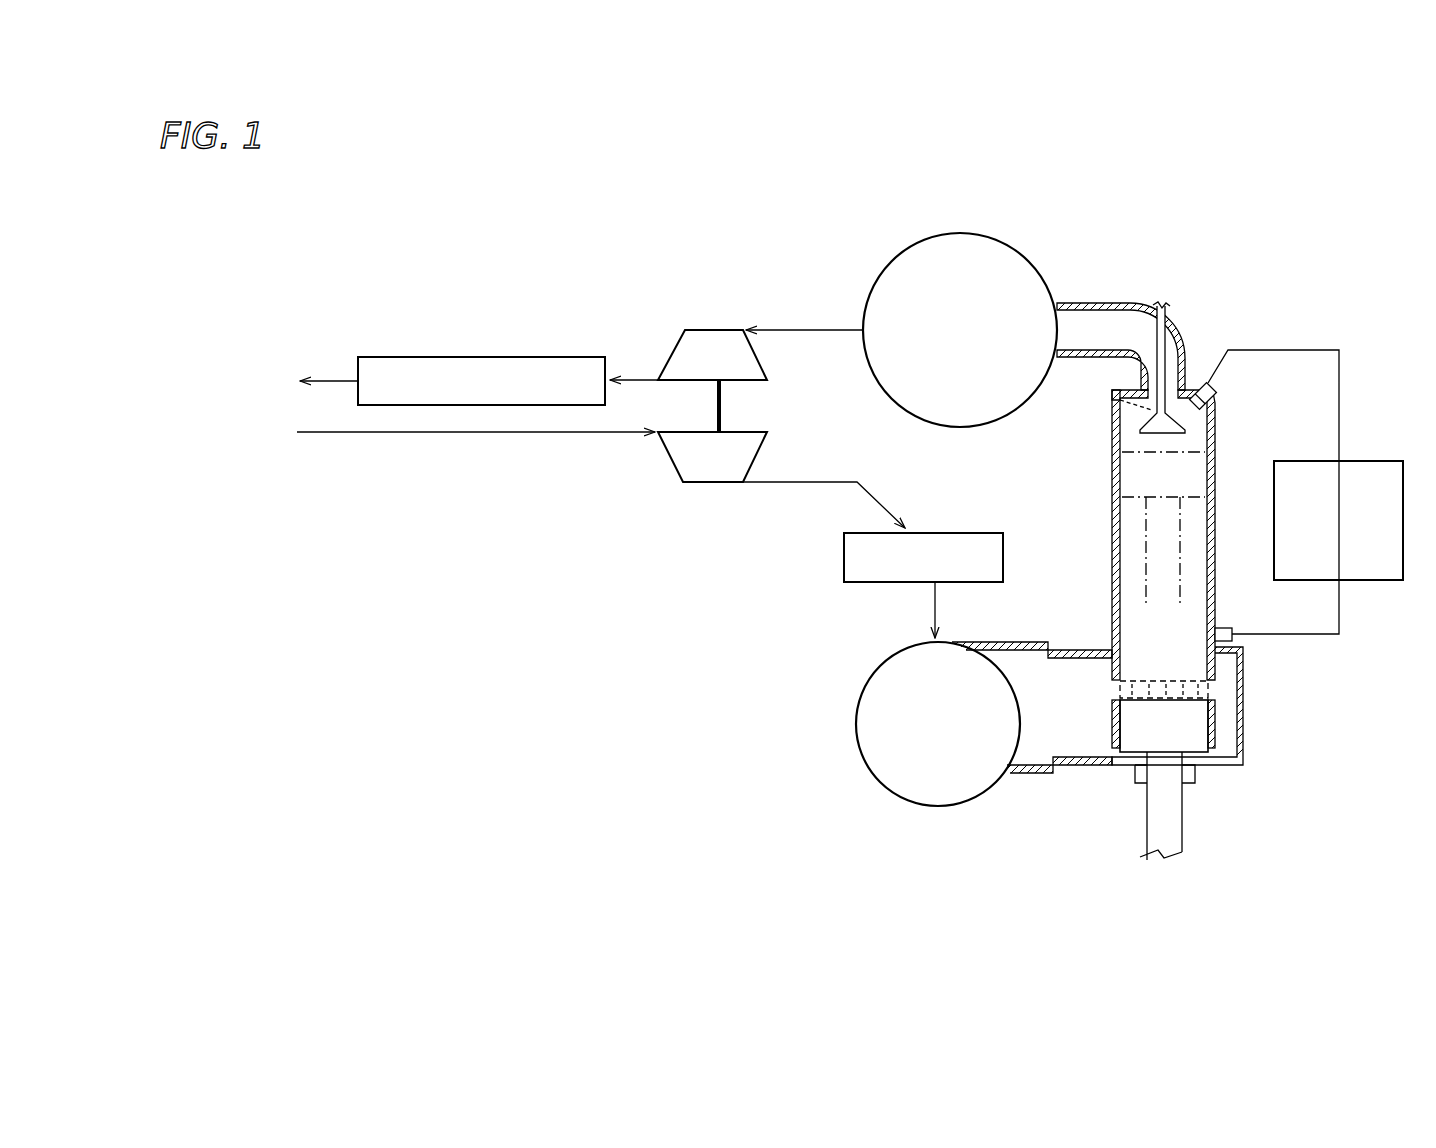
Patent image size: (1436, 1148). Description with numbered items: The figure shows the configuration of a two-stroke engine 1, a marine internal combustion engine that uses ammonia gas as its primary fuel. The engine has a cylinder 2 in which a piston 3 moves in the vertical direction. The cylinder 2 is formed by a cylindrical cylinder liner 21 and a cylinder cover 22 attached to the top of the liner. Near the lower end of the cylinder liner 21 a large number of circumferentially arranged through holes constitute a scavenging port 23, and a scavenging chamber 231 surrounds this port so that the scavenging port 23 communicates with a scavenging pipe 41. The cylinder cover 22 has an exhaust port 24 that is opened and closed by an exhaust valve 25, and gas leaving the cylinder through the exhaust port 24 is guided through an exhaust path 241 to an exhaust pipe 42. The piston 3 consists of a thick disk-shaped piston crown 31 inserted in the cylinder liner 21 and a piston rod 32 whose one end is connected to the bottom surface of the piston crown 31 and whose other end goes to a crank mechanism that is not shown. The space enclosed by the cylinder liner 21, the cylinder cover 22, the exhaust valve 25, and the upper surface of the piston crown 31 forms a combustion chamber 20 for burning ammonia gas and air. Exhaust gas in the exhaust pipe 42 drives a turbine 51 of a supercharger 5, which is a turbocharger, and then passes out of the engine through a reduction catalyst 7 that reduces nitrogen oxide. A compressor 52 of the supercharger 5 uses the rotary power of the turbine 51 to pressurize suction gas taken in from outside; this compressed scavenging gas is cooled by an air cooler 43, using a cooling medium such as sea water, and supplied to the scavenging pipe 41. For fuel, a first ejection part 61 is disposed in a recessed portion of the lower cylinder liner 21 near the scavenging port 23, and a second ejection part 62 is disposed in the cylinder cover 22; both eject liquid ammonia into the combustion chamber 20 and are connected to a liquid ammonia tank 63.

The two-stroke engine 1 is at (675, 226).
The cylinder 2 is at (1022, 459).
The piston 3 is at (1143, 493).
The supercharger 5 is at (858, 445).
The reduction catalyst 7 is at (480, 357).
The combustion chamber 20 is at (1143, 646).
The cylinder liner 21 is at (1118, 490).
The cylinder cover 22 is at (1112, 425).
The scavenging port 23 is at (1218, 689).
The scavenging chamber 231 is at (1083, 742).
The exhaust port 24 is at (1186, 356).
The exhaust path 241 is at (1096, 336).
The exhaust valve 25 is at (1138, 381).
The piston crown 31 is at (1165, 740).
The piston rod 32 is at (1170, 805).
The scavenging pipe 41 is at (868, 728).
The exhaust pipe 42 is at (890, 285).
The air cooler 43 is at (844, 556).
The turbine 51 is at (745, 362).
The compressor 52 is at (743, 447).
The first ejection part 61 is at (1228, 646).
The second ejection part 62 is at (1214, 393).
The liquid ammonia tank 63 is at (1368, 461).